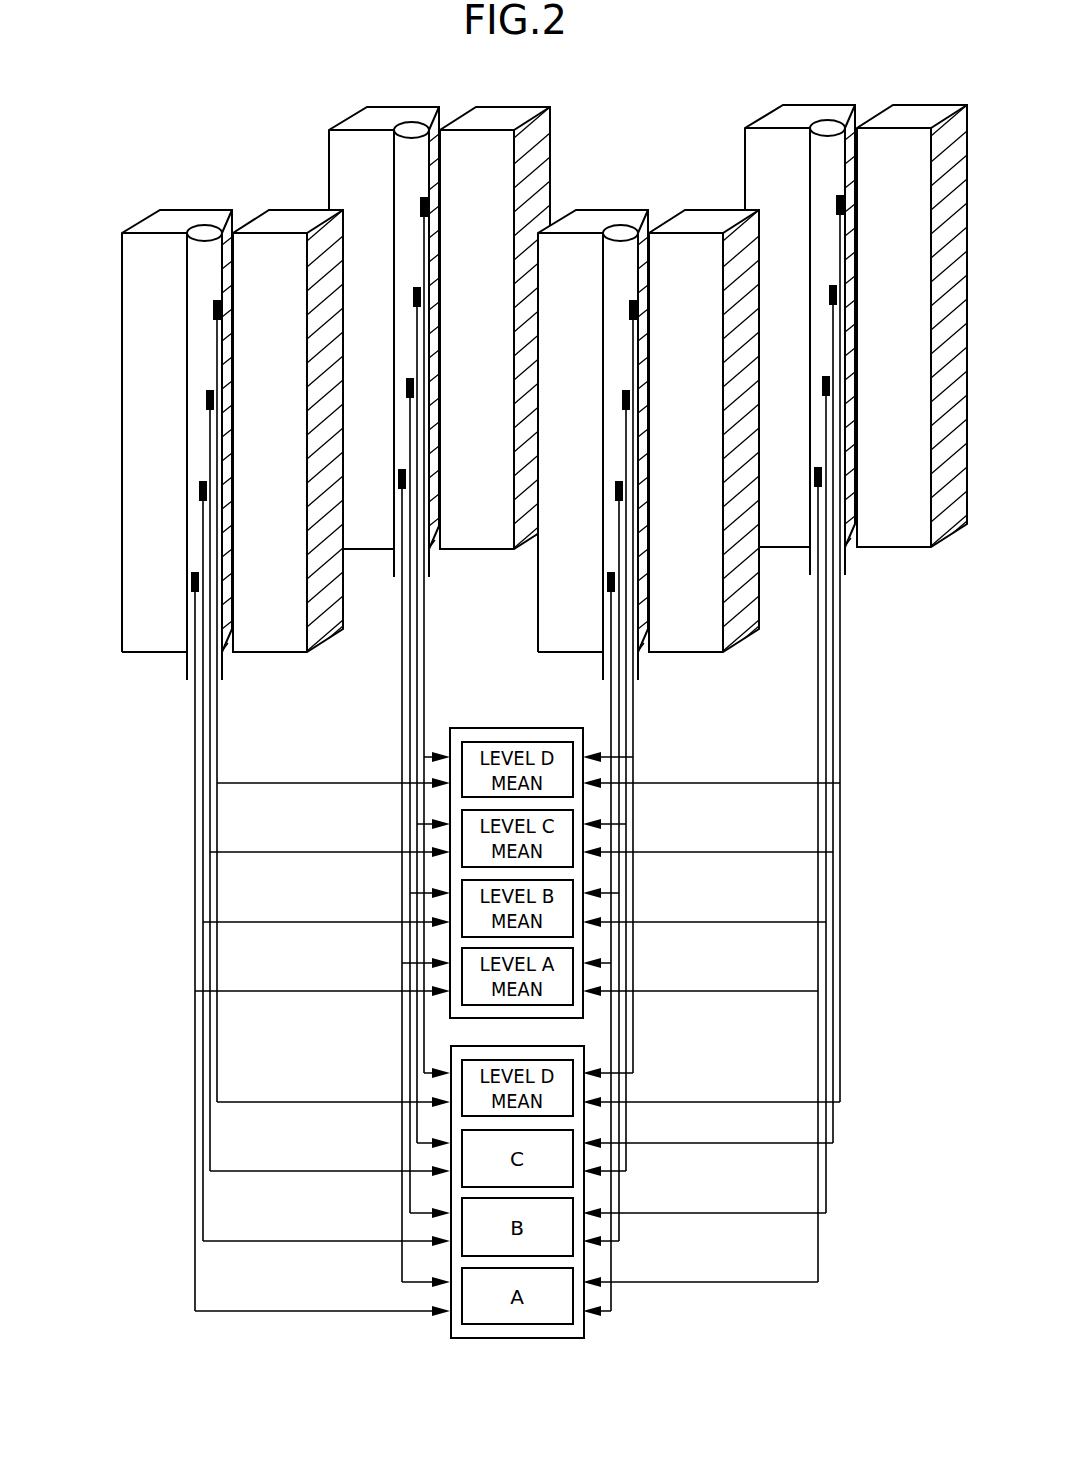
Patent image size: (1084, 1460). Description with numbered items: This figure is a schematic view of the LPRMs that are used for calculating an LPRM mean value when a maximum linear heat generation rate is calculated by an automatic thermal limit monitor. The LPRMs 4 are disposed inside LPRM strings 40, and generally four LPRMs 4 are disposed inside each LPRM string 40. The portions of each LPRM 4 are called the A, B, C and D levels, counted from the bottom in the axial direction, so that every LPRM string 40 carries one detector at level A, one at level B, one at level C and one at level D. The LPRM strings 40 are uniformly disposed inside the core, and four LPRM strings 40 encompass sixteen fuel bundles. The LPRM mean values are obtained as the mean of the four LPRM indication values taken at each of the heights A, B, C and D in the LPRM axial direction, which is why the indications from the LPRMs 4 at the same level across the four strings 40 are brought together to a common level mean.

The LPRM string 40 is at (200, 271).
The LPRM 4 is at (206, 393).
The A level A is at (491, 889).
The B level B is at (495, 808).
The C level C is at (498, 728).
The D level D is at (501, 648).